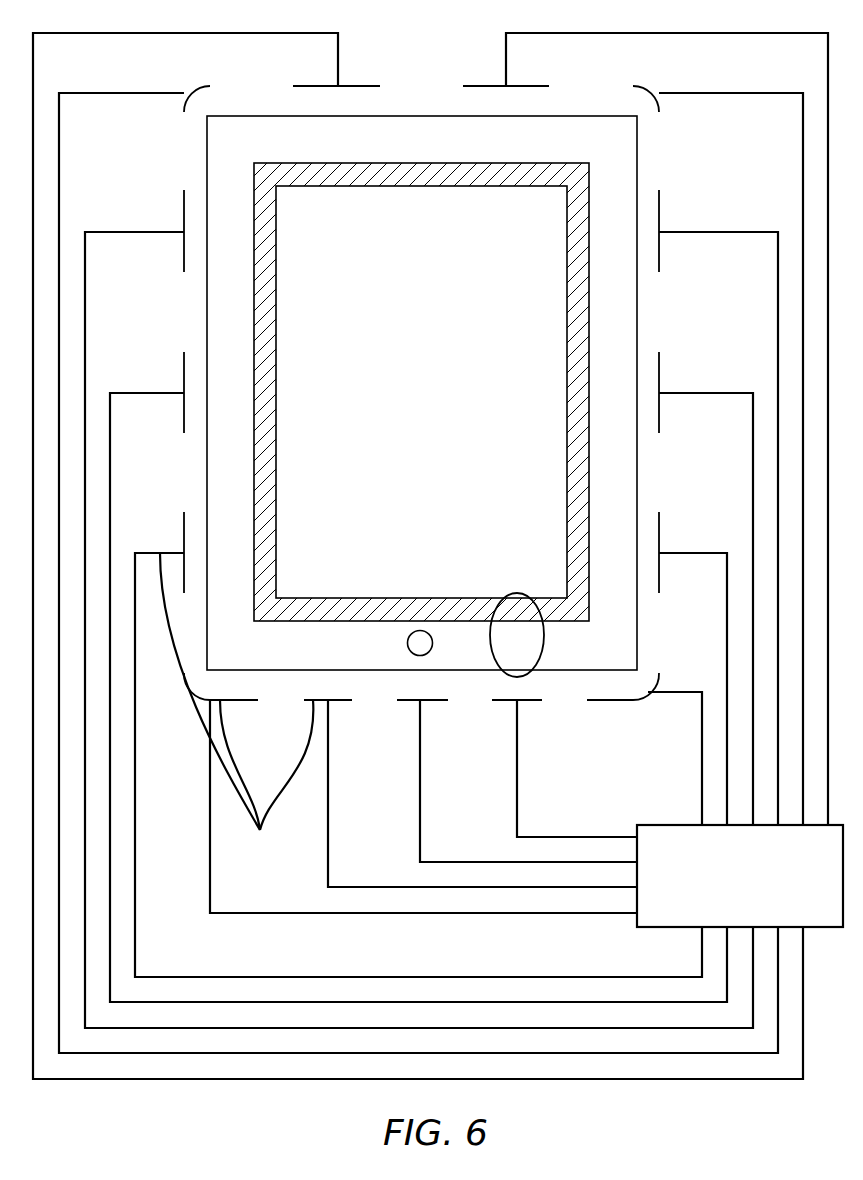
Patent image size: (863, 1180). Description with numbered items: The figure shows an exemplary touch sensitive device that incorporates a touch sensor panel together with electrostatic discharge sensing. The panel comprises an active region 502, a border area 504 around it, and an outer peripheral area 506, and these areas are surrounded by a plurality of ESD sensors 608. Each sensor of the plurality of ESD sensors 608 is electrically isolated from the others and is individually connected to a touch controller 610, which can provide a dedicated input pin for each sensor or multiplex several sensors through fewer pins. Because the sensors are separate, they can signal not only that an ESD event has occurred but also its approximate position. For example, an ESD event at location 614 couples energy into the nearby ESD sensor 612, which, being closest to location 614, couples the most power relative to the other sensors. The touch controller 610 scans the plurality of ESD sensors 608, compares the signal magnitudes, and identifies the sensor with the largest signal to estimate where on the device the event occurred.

The active region 502 is at (542, 207).
The border area 504 is at (577, 315).
The peripheral area 506 is at (637, 490).
The plurality of ESD sensors 608 is at (236, 707).
The touch controller 610 is at (740, 876).
The ESD sensor 612 is at (528, 700).
The location 614 is at (518, 593).